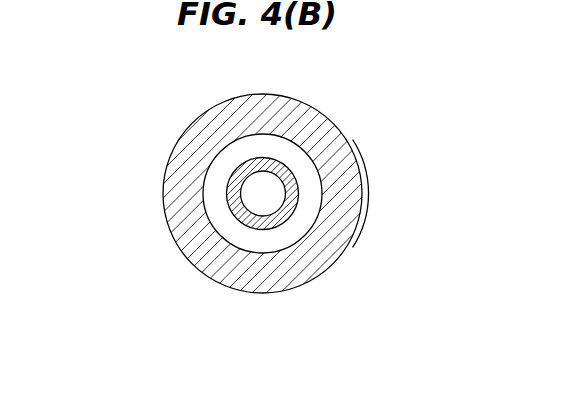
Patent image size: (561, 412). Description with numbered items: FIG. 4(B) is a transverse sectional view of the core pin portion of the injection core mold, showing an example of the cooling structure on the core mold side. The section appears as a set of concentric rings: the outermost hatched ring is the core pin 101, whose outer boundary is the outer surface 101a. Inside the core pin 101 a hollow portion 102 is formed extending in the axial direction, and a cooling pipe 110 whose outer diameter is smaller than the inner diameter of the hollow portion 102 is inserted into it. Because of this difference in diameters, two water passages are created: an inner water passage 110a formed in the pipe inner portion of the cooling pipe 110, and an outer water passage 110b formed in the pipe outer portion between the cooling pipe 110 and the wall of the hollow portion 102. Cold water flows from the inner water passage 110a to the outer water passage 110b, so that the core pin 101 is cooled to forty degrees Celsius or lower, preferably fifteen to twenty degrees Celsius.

The core pin 101 is at (160, 196).
The outer surface of optical fiber 101a is at (362, 190).
The hollow portion 102 is at (300, 220).
The cooling pipe 110 is at (281, 164).
The inner water passage 110a is at (253, 187).
The outer water passage 110b is at (307, 200).